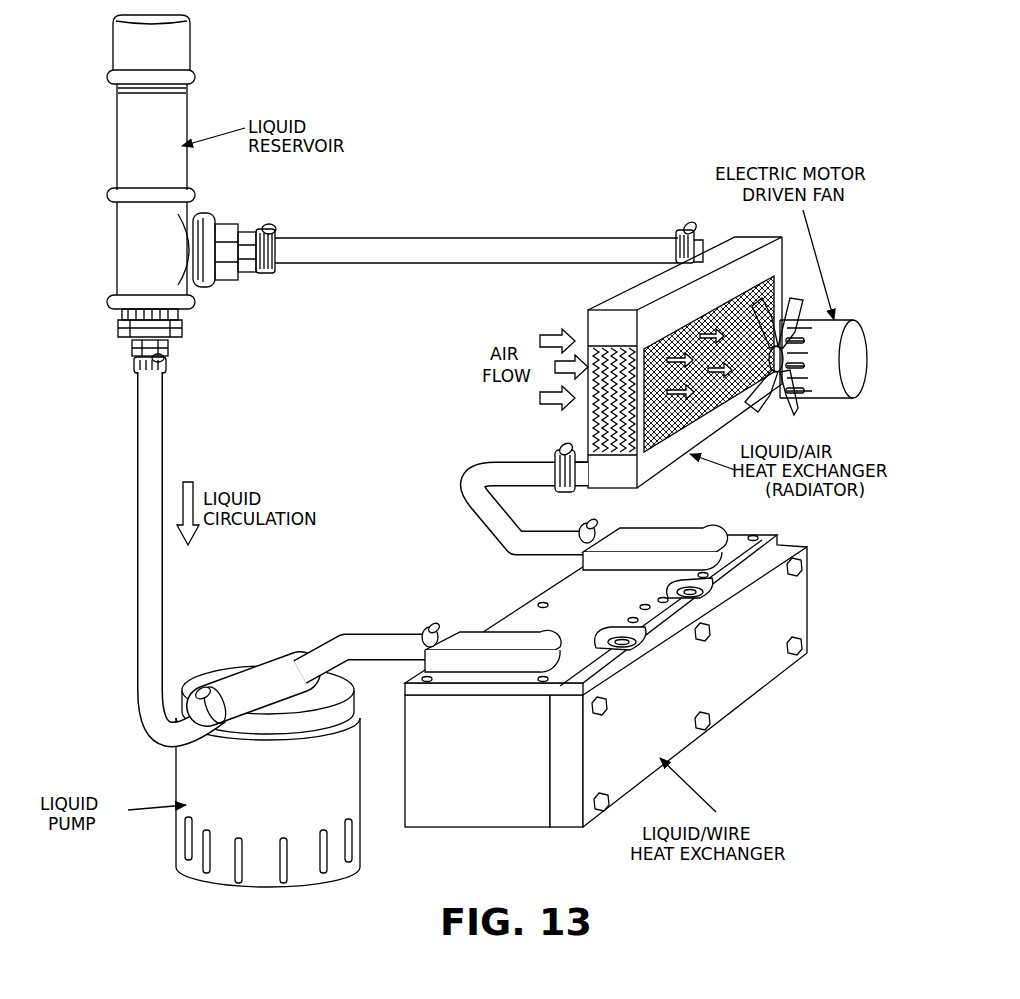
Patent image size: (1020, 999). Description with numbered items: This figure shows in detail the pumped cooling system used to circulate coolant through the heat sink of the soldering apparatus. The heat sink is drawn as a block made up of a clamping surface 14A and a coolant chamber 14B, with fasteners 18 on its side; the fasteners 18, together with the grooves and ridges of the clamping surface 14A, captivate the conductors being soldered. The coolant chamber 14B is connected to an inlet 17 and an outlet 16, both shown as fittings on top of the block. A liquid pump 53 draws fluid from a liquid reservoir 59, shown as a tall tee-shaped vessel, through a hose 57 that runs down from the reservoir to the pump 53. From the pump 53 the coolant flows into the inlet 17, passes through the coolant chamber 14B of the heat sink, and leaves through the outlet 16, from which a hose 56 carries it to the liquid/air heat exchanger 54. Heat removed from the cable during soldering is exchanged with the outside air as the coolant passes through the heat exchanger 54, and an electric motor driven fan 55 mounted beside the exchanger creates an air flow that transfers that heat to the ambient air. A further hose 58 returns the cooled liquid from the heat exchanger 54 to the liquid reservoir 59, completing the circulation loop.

The liquid reservoir 59 is at (118, 142).
The hose from reservoir to radiator 58 is at (500, 238).
The liquid/air heat exchanger 54 is at (600, 306).
The fan 55 is at (846, 326).
The hose from radiator to heat exchanger 56 is at (455, 485).
The outlet 16 is at (690, 532).
The inlet 17 is at (470, 634).
The hose from reservoir to pump 57 is at (137, 665).
The liquid pump 53 is at (262, 890).
The fasteners 18 is at (712, 720).
The clamping surface 14A is at (578, 828).
The coolant chamber 14B is at (440, 828).